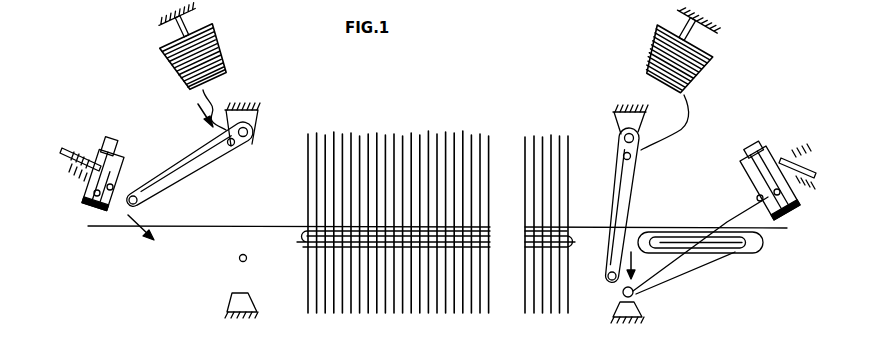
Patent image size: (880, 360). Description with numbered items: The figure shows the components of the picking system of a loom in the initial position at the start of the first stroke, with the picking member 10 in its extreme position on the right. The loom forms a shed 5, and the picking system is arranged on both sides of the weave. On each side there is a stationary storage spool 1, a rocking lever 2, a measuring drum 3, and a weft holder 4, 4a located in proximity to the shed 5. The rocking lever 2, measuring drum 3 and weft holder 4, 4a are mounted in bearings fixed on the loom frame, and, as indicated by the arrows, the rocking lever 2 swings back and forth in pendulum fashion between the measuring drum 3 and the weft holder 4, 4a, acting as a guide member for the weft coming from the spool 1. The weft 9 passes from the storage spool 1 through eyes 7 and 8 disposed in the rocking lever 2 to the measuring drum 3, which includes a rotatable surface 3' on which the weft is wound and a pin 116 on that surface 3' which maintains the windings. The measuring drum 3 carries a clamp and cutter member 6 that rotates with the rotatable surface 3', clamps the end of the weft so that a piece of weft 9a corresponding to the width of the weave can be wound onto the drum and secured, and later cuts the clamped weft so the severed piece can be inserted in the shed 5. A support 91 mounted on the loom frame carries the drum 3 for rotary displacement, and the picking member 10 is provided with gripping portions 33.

The storage spool 1 is at (216, 42).
The rocking lever 2 is at (180, 178).
The measuring drum 3 is at (441, 172).
The rotatable surface 3' is at (432, 152).
The weft holder 4 is at (232, 294).
The weft holder 4a is at (246, 261).
The shed 5 is at (308, 172).
The clamp and cutter member 6 is at (90, 178).
The eye 7 is at (233, 144).
The eye 8 is at (138, 203).
The weft 9 is at (212, 100).
The piece of weft 9a is at (93, 210).
The picking member 10 is at (758, 252).
The gripping portions 33 is at (737, 254).
The support 91 is at (96, 150).
The pin 116 is at (136, 176).